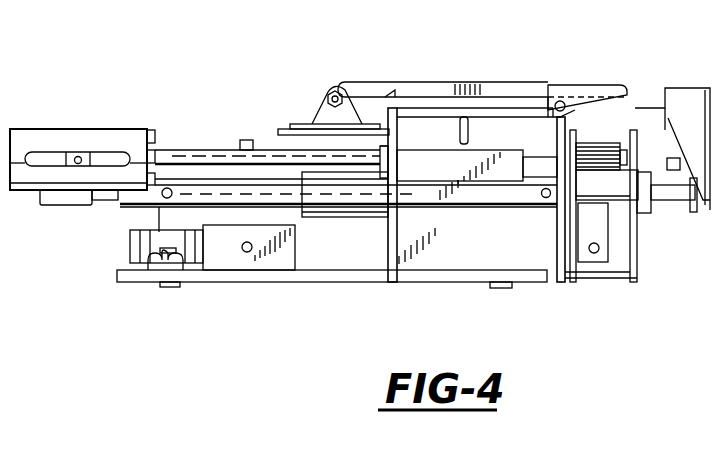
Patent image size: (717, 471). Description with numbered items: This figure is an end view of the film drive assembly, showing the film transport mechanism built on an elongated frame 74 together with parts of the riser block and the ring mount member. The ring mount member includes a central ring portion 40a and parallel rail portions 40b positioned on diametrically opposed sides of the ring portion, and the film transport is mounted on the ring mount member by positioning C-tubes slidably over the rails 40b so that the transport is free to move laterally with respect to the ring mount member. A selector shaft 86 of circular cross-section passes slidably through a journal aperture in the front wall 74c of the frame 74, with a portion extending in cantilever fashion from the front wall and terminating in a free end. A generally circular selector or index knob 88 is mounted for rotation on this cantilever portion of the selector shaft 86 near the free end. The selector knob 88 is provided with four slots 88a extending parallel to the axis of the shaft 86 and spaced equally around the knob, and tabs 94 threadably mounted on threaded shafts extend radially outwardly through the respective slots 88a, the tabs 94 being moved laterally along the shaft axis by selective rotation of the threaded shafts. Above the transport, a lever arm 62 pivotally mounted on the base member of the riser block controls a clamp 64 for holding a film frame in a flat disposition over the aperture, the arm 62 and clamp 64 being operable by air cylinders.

The selector knob 88 is at (57, 128).
The tab 94 is at (95, 158).
The selector shaft 86 is at (200, 150).
The slot 88a is at (34, 185).
The central ring portion 40a is at (102, 203).
The clamp 64 is at (292, 124).
The lever arm 62 is at (428, 88).
The frame 74 is at (513, 107).
The front wall 74c is at (386, 250).
The rail portion 40b is at (651, 215).